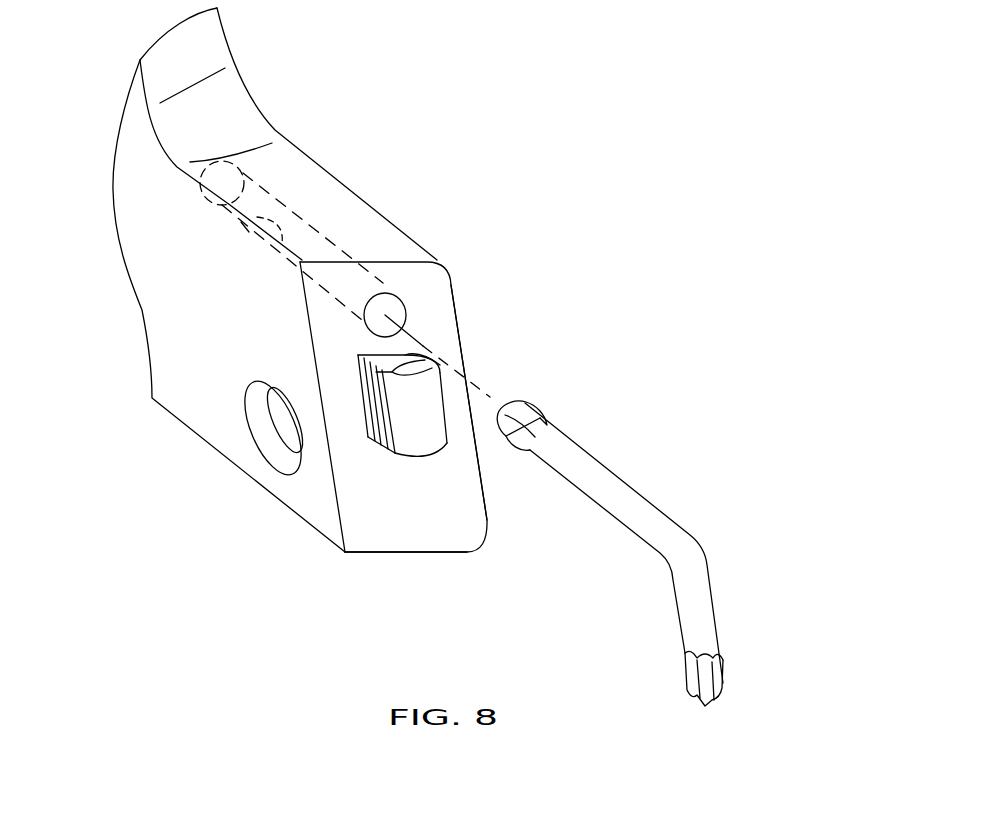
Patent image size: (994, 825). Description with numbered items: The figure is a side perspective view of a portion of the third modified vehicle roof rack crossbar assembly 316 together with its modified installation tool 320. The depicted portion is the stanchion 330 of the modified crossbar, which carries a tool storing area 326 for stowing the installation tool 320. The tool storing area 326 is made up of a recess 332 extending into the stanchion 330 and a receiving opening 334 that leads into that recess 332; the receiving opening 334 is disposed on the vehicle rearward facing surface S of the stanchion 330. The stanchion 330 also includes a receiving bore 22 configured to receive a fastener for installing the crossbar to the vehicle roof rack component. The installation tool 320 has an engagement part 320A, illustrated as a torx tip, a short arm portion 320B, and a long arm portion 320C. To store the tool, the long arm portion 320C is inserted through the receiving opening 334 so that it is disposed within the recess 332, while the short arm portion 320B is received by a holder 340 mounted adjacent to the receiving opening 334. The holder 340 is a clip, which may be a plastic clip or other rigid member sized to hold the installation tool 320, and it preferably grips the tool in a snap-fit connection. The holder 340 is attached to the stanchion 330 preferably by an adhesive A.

The third modified vehicle roof rack crossbar assembly 316 is at (690, 117).
The stanchion 330 is at (522, 202).
The tool storing area 326 is at (423, 297).
The receiving opening 334 is at (404, 316).
The recess 332 is at (281, 242).
The receiving bore 22 is at (265, 428).
The adhesive A is at (365, 393).
The holder 340 is at (417, 457).
The vehicle rearward facing surface S is at (463, 518).
The installation tool 320 is at (643, 553).
The engagement part 320A is at (510, 433).
The short arm portion 320B is at (677, 620).
The long arm portion 320C is at (598, 460).